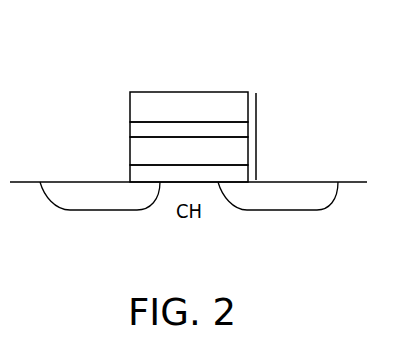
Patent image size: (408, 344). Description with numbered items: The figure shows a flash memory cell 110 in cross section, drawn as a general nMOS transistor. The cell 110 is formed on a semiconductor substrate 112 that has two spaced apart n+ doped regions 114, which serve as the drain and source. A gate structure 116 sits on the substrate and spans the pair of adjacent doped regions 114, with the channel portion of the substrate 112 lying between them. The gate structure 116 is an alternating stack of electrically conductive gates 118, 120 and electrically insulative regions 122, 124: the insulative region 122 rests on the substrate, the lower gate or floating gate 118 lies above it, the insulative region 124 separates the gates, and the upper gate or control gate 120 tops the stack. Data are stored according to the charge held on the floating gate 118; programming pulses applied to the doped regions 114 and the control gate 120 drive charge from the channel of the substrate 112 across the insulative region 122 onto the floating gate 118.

The flash memory cell 110 is at (280, 39).
The semiconductor substrate 112 is at (235, 258).
The n+ doped regions 114 is at (90, 211).
The gate structure 116 is at (256, 138).
The floating gate 118 is at (129, 150).
The control gate 120 is at (129, 112).
The insulative region 122 is at (129, 176).
The insulative region 124 is at (129, 129).